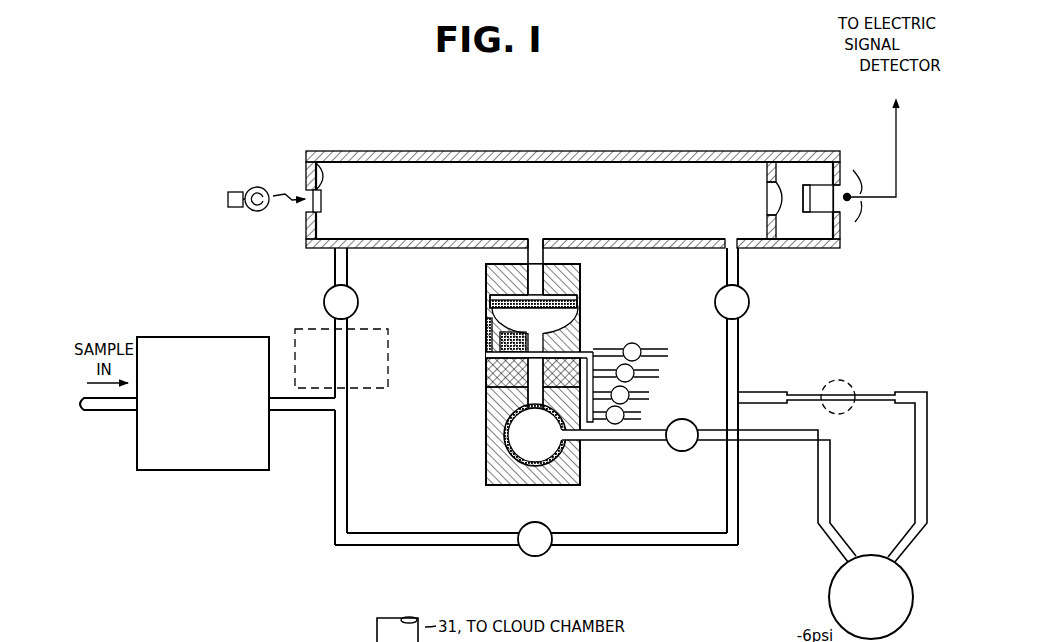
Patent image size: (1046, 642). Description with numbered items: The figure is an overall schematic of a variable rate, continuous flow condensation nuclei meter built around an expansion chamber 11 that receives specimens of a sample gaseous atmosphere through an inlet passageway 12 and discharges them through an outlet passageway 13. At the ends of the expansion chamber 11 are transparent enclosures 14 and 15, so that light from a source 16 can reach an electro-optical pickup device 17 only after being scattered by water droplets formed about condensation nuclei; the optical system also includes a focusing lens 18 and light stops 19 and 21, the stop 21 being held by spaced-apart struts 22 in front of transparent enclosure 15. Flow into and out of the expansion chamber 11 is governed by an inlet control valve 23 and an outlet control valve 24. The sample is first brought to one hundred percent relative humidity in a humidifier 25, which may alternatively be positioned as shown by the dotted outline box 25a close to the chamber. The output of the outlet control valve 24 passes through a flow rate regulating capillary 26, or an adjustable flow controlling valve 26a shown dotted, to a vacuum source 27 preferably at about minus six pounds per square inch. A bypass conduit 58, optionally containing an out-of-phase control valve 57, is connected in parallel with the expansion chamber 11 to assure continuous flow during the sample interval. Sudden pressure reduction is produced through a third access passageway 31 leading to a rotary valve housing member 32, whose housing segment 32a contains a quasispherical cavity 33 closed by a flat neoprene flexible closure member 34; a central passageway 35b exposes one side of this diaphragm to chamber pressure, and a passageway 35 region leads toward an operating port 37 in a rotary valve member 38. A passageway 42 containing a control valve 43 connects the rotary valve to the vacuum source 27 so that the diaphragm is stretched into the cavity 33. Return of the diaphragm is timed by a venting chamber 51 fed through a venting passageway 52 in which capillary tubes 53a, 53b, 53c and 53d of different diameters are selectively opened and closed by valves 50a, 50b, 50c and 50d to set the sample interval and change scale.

The expansion chamber 11 is at (365, 152).
The inlet passageway 12 is at (335, 272).
The outlet passageway 13 is at (727, 240).
The transparent enclosure 14 is at (312, 196).
The transparent enclosure 15 is at (843, 213).
The light source 16 is at (257, 212).
The electro-optical pickup device 17 is at (857, 183).
The focusing lens 18 is at (781, 184).
The light stop 19 is at (323, 184).
The light stop 21 is at (811, 185).
The struts 22 is at (829, 242).
The inlet control valve 23 is at (356, 302).
The outlet control valve 24 is at (748, 305).
The humidifier 25 is at (232, 470).
The dotted outline box 25a is at (362, 389).
The flow rate regulating device 26 is at (802, 392).
The flow controlling valve 26a is at (840, 382).
The vacuum source 27 is at (882, 556).
The third access passageway 31 is at (545, 242).
The rotary valve housing member 32 is at (472, 332).
The housing segment 32a is at (580, 333).
The quasispherical cavity 33 is at (577, 316).
The flexible closure member 34 is at (568, 300).
The body section 35 is at (532, 373).
The central passageway 35b is at (377, 632).
The port 37 is at (535, 435).
The rotary valve member 38 is at (508, 440).
The passageway 42 is at (651, 441).
The control valve 43 is at (684, 452).
The valve 50a is at (633, 343).
The valve 50b is at (634, 372).
The valve 50c is at (630, 396).
The valve 50d is at (624, 416).
The venting chamber 51 is at (490, 355).
The venting passageway 52 is at (598, 379).
The capillary tube 53a is at (660, 349).
The capillary tube 53b is at (660, 378).
The capillary tube 53c is at (650, 400).
The capillary tube 53d is at (637, 421).
The out-of-phase control valve 57 is at (522, 527).
The bypass conduit 58 is at (630, 532).